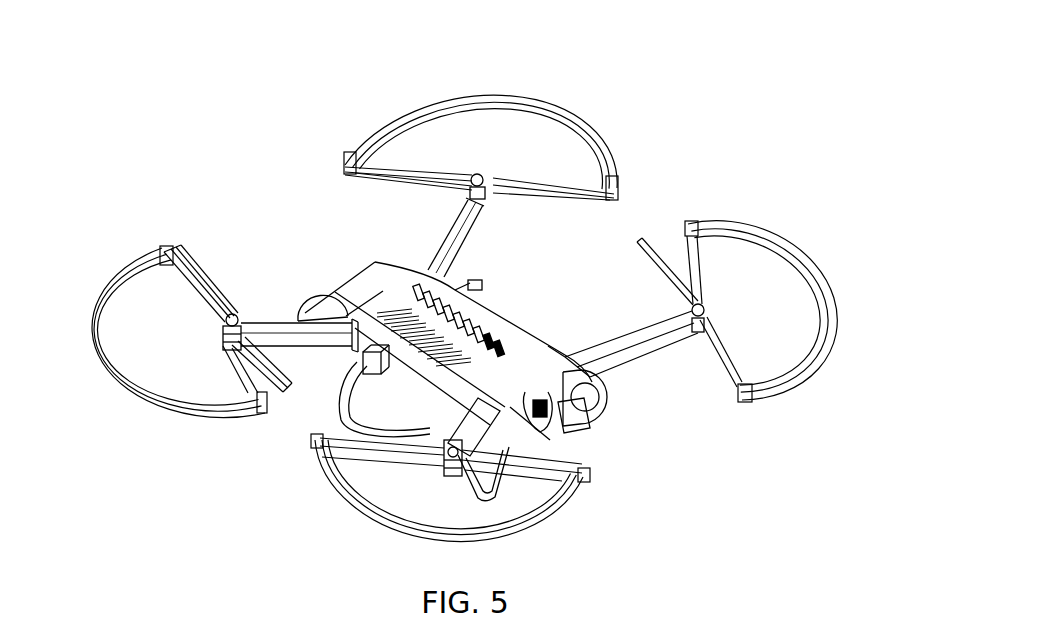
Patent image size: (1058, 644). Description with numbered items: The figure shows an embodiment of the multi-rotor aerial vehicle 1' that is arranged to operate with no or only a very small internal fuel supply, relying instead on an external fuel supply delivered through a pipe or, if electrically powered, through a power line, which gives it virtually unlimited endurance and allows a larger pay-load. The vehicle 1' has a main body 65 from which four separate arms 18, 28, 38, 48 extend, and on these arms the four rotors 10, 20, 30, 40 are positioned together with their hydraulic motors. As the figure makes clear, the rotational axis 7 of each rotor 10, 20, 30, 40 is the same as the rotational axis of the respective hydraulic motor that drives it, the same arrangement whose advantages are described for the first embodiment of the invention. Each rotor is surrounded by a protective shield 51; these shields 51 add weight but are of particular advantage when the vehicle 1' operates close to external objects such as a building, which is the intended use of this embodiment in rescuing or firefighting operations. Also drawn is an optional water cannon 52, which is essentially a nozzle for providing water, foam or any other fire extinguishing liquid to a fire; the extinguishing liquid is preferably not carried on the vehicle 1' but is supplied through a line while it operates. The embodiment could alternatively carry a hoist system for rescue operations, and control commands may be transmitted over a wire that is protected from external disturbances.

The multi-rotor aerial vehicle 1' is at (487, 301).
The rotational axis 7 is at (478, 184).
The rotor 10 is at (708, 334).
The arm 18 is at (637, 344).
The rotor 20 is at (508, 449).
The arm 28 is at (480, 425).
The rotor 30 is at (405, 172).
The arm 38 is at (455, 229).
The rotor 40 is at (192, 262).
The arm 48 is at (277, 326).
The protective shield 51 is at (593, 138).
The water cannon 52 is at (575, 420).
The main body 65 is at (500, 358).